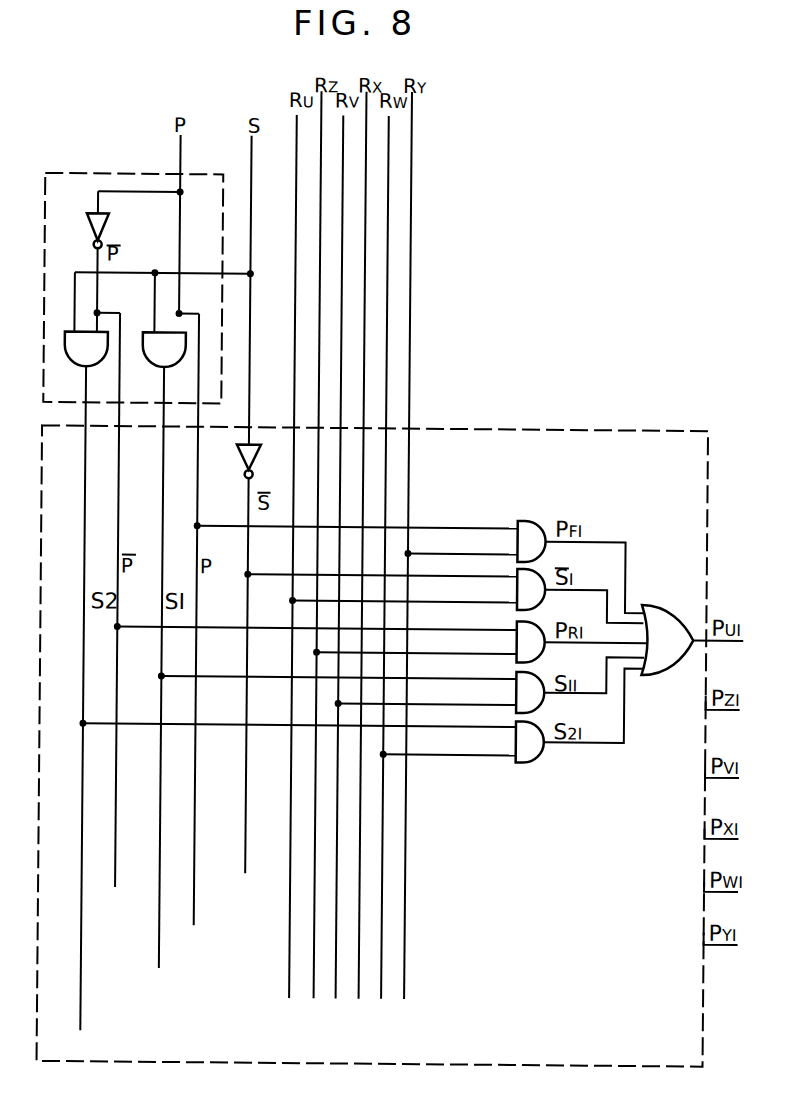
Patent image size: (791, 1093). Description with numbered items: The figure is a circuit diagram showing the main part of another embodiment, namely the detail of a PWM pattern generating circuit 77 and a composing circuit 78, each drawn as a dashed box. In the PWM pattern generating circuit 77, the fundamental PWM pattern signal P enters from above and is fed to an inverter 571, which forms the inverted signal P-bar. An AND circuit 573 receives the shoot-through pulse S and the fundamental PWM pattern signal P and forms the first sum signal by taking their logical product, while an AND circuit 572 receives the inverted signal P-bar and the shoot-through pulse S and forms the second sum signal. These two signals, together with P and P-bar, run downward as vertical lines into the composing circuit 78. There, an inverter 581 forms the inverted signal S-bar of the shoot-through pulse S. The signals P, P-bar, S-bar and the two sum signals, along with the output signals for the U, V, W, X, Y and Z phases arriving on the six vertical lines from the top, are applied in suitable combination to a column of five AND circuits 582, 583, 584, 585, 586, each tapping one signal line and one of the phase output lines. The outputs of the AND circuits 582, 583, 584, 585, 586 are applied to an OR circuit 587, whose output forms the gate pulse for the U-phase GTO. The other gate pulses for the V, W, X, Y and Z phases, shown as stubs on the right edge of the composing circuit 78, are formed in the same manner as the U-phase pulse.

The PWM pattern generating circuit 77 is at (93, 176).
The composing circuit 78 is at (656, 428).
The inverter 571 is at (89, 237).
The AND circuit 572 is at (67, 359).
The AND circuit 573 is at (146, 359).
The inverter 581 is at (242, 460).
The AND circuit 582 is at (520, 519).
The AND circuit 583 is at (517, 589).
The AND circuit 584 is at (517, 641).
The AND circuit 585 is at (517, 692).
The AND circuit 586 is at (517, 742).
The OR circuit 587 is at (666, 674).